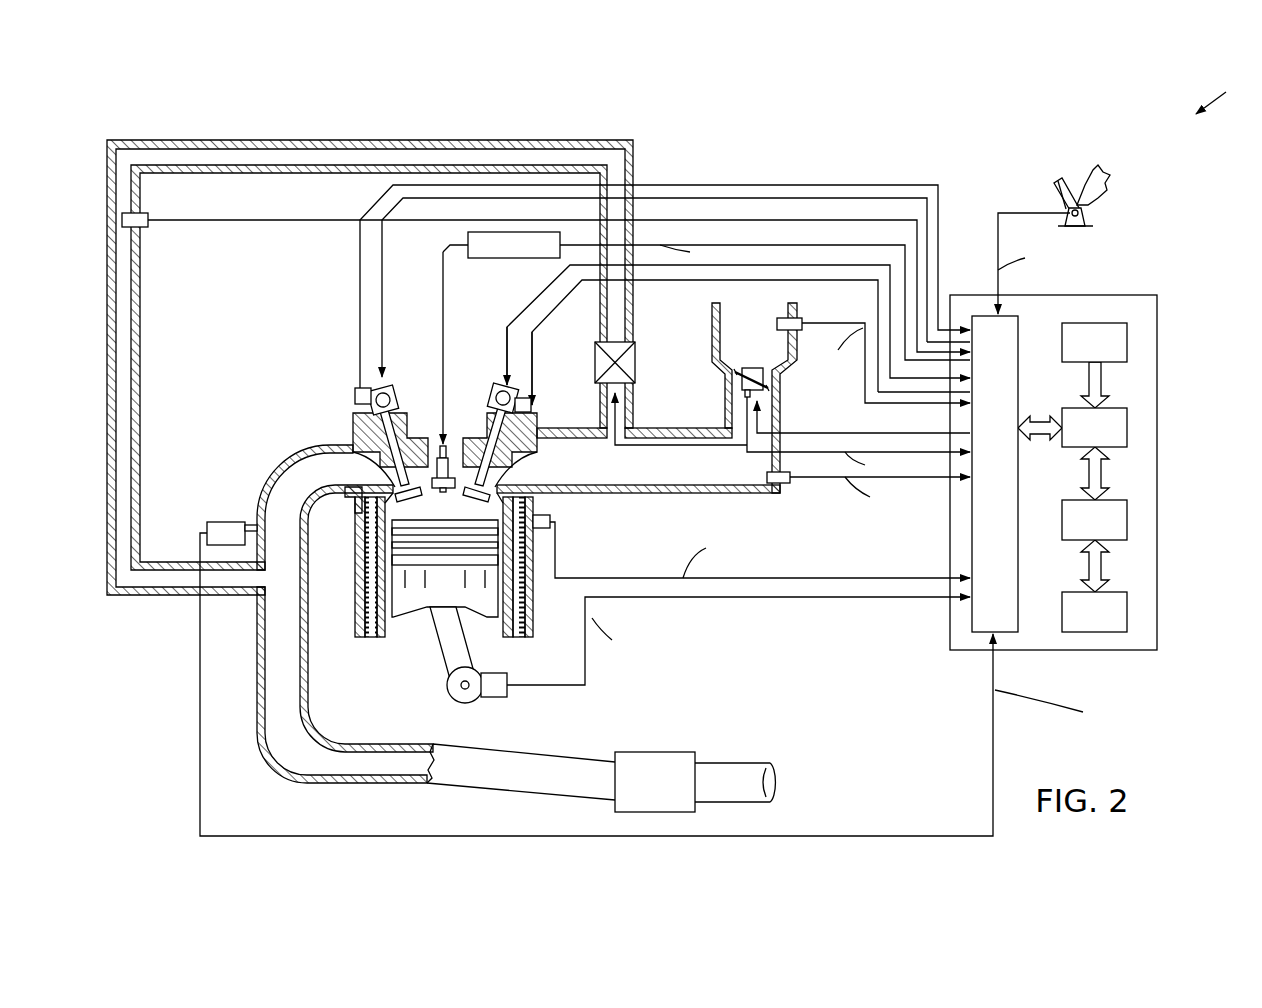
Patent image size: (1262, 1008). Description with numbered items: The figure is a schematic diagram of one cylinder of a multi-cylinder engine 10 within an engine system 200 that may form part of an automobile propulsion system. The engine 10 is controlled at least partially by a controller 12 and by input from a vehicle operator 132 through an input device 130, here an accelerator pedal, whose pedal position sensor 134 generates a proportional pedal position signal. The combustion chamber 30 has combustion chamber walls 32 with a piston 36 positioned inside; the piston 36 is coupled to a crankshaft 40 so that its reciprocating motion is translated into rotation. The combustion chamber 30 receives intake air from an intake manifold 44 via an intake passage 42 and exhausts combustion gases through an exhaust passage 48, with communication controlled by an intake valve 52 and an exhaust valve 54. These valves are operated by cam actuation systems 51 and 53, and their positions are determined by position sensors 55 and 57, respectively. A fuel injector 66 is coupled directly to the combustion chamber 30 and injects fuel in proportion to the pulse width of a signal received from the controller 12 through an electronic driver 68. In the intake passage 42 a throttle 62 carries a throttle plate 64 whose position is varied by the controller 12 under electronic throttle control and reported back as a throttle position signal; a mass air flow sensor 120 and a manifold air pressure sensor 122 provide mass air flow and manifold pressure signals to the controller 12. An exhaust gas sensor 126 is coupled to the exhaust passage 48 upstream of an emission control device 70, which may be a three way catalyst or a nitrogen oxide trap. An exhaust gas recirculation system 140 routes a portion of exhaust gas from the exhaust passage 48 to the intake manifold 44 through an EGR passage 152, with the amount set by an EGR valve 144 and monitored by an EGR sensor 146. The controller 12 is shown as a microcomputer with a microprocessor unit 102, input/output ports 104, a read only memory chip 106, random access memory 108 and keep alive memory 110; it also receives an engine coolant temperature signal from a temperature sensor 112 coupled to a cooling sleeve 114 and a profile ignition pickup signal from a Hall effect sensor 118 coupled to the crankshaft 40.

The engine 10 is at (292, 372).
The controller 12 is at (1150, 295).
The combustion chamber 30 is at (420, 507).
The combustion chamber walls 32 is at (393, 627).
The piston 36 is at (428, 593).
The crankshaft 40 is at (453, 700).
The intake passage 42 is at (737, 349).
The intake manifold 44 is at (679, 473).
The exhaust passage 48 is at (309, 479).
The cam actuation system 51 is at (498, 385).
The intake valve 52 is at (482, 470).
The cam actuation system 53 is at (395, 388).
The exhaust valve 54 is at (398, 463).
The position sensor 55 is at (527, 404).
The position sensor 57 is at (360, 402).
The throttle 62 is at (762, 378).
The throttle plate 64 is at (737, 375).
The fuel injector 66 is at (446, 455).
The electronic driver 68 is at (540, 258).
The emission control device 70 is at (644, 793).
The microprocessor unit 102 is at (1127, 430).
The input/output ports 104 is at (1020, 322).
The read only memory chip 106 is at (1127, 340).
The random access memory 108 is at (1127, 520).
The keep alive memory 110 is at (1127, 612).
The temperature sensor 112 is at (538, 530).
The cooling sleeve 114 is at (518, 597).
The Hall effect sensor 118 is at (493, 697).
The mass air flow sensor 120 is at (795, 318).
The manifold air pressure sensor 122 is at (785, 483).
The exhaust gas sensor 126 is at (207, 527).
The input device 130 is at (1058, 190).
The vehicle operator 132 is at (1103, 180).
The pedal position sensor 134 is at (1090, 215).
The exhaust gas recirculation system 140 is at (504, 126).
The EGR valve 144 is at (636, 371).
The EGR sensor 146 is at (144, 227).
The EGR passage 152 is at (365, 140).
The engine system 200 is at (1228, 93).